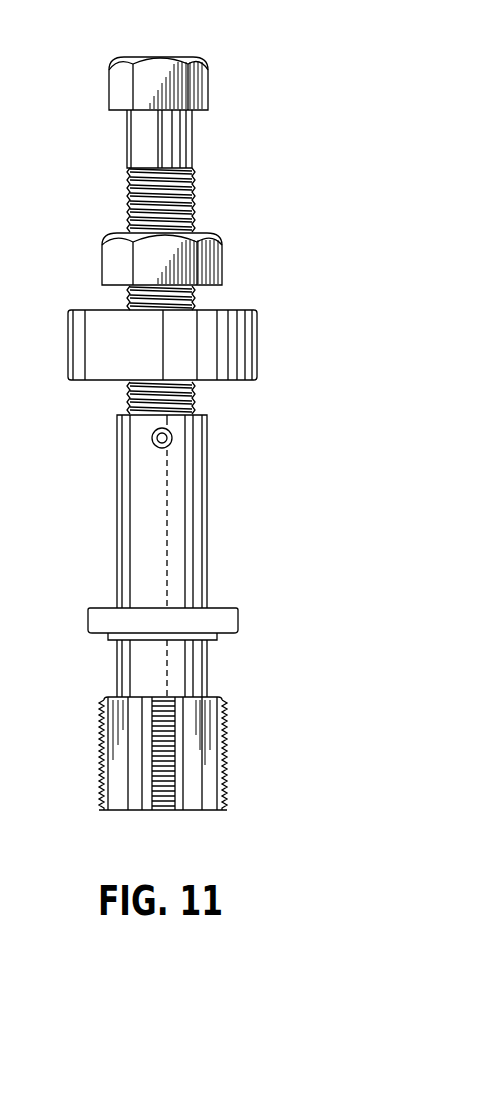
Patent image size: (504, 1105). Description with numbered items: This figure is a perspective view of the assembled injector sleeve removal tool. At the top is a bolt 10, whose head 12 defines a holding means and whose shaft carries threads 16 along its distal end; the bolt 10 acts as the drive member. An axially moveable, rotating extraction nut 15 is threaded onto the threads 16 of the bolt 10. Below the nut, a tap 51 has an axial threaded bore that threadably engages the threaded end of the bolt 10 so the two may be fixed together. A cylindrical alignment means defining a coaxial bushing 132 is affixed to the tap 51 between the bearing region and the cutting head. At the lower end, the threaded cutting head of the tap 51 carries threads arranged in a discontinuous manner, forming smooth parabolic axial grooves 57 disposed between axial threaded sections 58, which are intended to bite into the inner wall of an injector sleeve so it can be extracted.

The bolt 10 is at (180, 145).
The head 12 is at (203, 61).
The threads 16 is at (193, 193).
The extraction nut 15 is at (207, 250).
The tap 51 is at (133, 527).
The coaxial bushing 132 is at (100, 613).
The axial grooves 57 is at (138, 767).
The axial threaded sections 58 is at (222, 765).